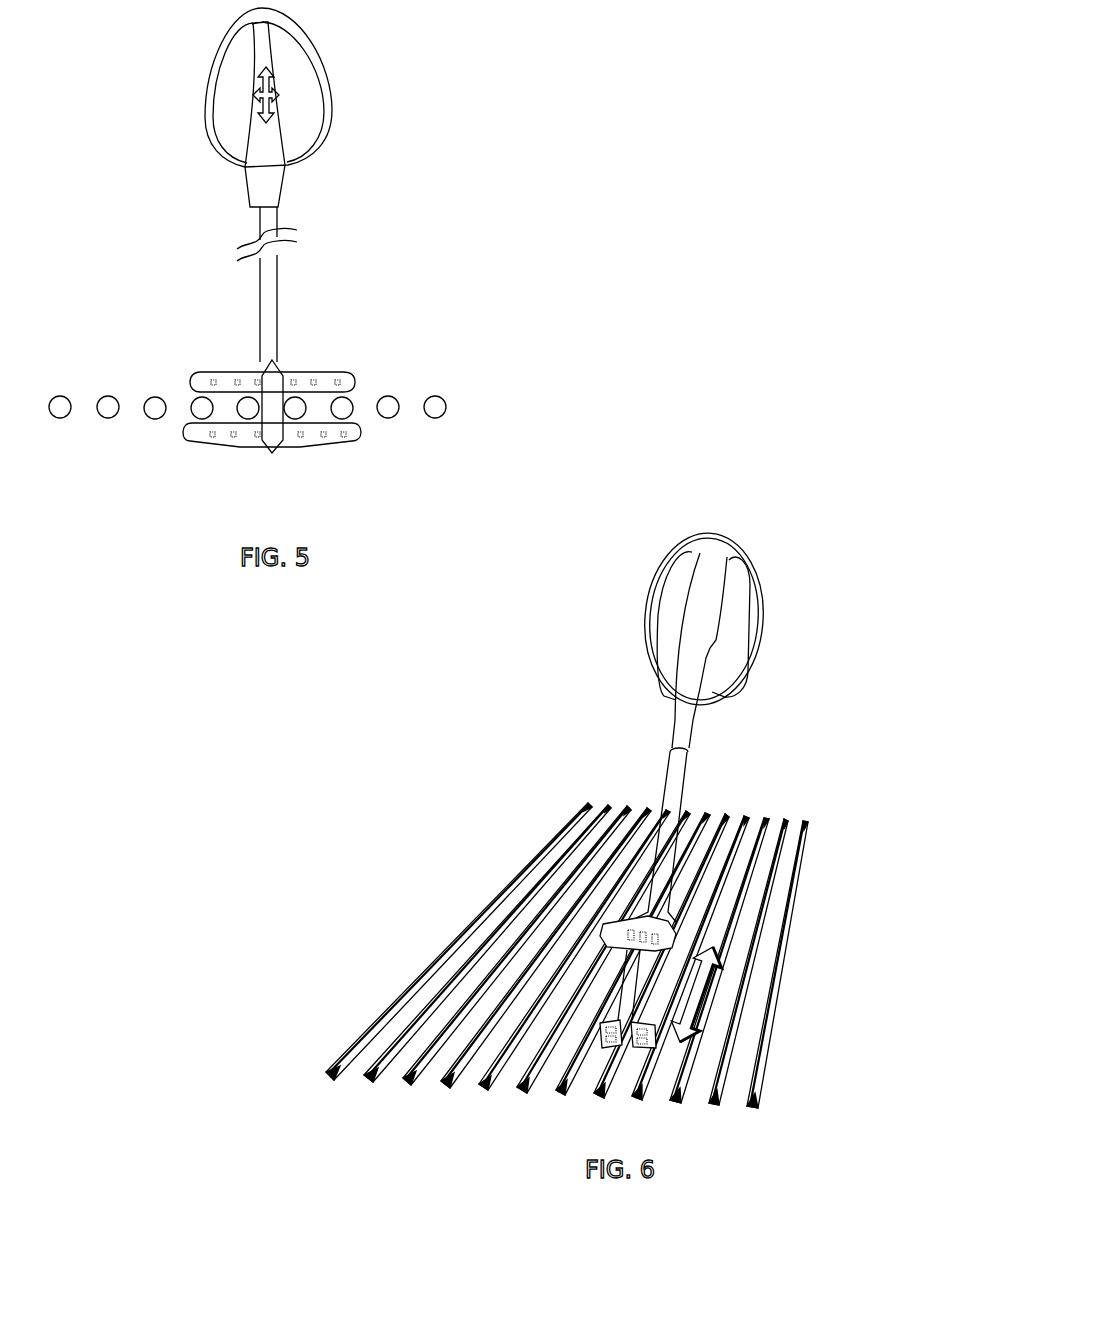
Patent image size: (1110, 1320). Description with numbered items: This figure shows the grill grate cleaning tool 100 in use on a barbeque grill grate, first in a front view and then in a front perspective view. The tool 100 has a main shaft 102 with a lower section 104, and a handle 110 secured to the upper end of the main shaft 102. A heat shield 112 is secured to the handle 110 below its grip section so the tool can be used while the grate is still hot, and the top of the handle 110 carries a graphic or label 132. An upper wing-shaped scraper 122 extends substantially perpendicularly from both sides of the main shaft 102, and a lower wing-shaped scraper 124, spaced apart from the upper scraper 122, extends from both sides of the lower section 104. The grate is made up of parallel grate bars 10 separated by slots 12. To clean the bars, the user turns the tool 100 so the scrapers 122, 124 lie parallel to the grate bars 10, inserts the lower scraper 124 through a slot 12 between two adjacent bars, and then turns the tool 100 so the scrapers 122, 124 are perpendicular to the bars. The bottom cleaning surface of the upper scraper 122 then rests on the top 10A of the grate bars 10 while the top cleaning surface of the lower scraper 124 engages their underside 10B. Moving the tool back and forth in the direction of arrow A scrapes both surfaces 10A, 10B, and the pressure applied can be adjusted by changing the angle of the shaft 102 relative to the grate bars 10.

In FIG. 5, the grill grate bars 10 is at (108, 407).
In FIG. 6, the grill grate bars 10 is at (562, 1070).
In FIG. 5, the top surface of grate bar 10A is at (157, 398).
In FIG. 5, the underside surface of grate bar 10B is at (163, 423).
In FIG. 5, the slot 12 is at (129, 424).
In FIG. 6, the cleaning tool 100 is at (739, 504).
In FIG. 5, the main shaft 102 is at (278, 278).
In FIG. 6, the main shaft 102 is at (660, 816).
In FIG. 6, the lower section 104 is at (623, 982).
In FIG. 5, the handle 110 is at (272, 173).
In FIG. 6, the handle 110 is at (687, 640).
In FIG. 5, the heat shield 112 is at (312, 107).
In FIG. 6, the heat shield 112 is at (655, 588).
In FIG. 5, the upper wing-shaped scraper 122 is at (322, 380).
In FIG. 6, the upper wing-shaped scraper 122 is at (588, 1022).
In FIG. 5, the lower wing-shaped scraper 124 is at (305, 443).
In FIG. 6, the lower wing-shaped scraper 124 is at (620, 928).
In FIG. 5, the graphic or label 132 is at (252, 95).
In FIG. 6, the arrow indicating direction of movement A is at (697, 987).